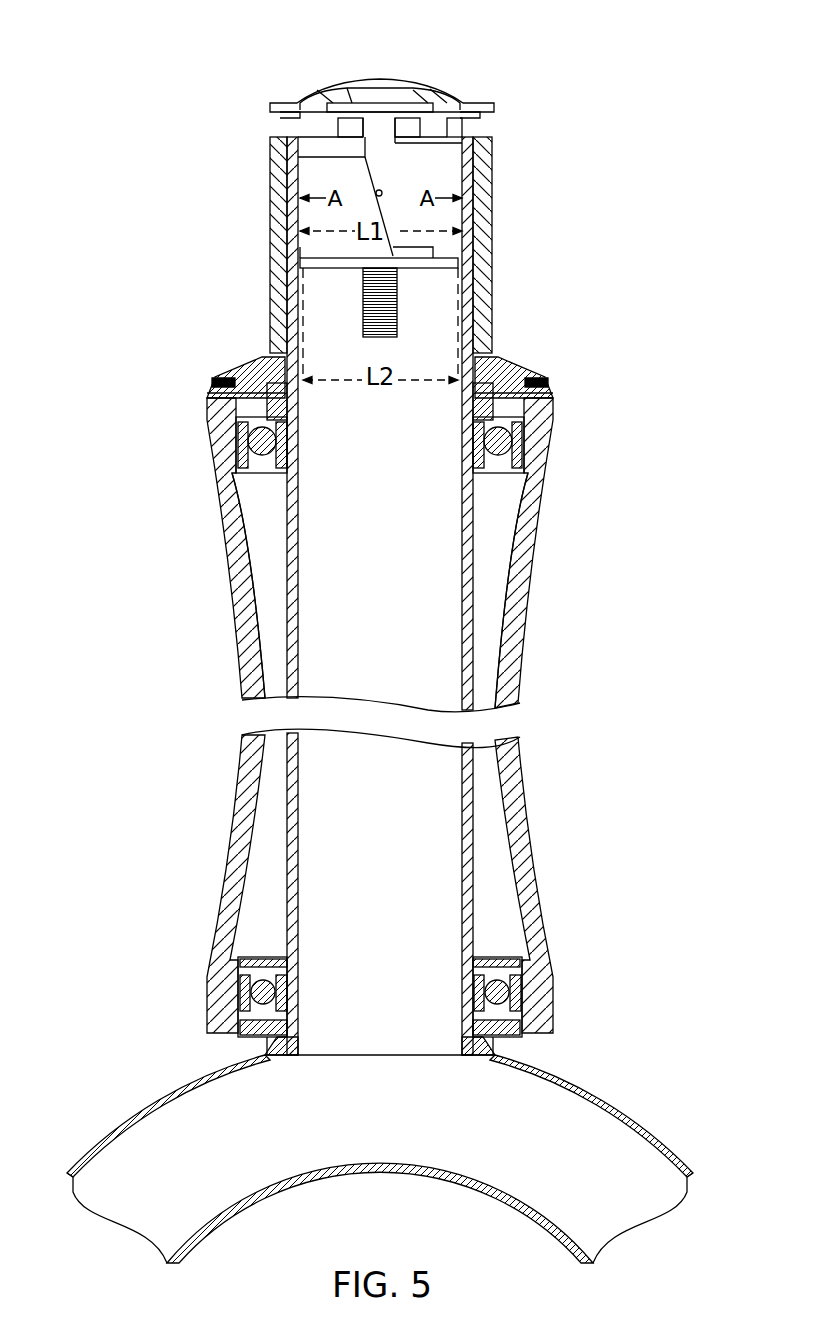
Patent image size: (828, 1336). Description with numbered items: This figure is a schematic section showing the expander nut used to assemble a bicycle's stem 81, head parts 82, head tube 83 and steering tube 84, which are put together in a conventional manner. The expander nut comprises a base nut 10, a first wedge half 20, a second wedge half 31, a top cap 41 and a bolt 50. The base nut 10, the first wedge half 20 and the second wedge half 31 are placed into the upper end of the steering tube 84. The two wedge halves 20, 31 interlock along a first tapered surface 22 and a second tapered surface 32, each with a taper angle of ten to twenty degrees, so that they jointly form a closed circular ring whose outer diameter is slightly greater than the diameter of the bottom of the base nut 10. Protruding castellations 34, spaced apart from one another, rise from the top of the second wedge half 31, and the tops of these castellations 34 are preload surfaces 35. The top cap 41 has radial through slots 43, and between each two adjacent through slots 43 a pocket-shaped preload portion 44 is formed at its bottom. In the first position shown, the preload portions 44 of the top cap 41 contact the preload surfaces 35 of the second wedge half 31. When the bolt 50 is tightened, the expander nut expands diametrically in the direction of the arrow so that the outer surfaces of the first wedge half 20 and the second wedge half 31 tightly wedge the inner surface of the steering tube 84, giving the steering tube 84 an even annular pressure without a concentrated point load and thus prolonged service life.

The base nut 10 is at (333, 269).
The first wedge half 20 is at (308, 245).
The first tapered surface 22 is at (298, 174).
The second wedge half 31 is at (451, 153).
The second tapered surface 32 is at (388, 164).
The protruding castellations 34 is at (386, 130).
The preload surfaces 35 is at (377, 110).
The top cap 41 is at (273, 84).
The through slots 43 is at (454, 103).
The preload portion 44 is at (413, 117).
The bolt 50 is at (398, 296).
The stem 81 is at (492, 232).
The head parts 82 is at (546, 362).
The head tube 83 is at (519, 672).
The steering tube 84 is at (474, 600).